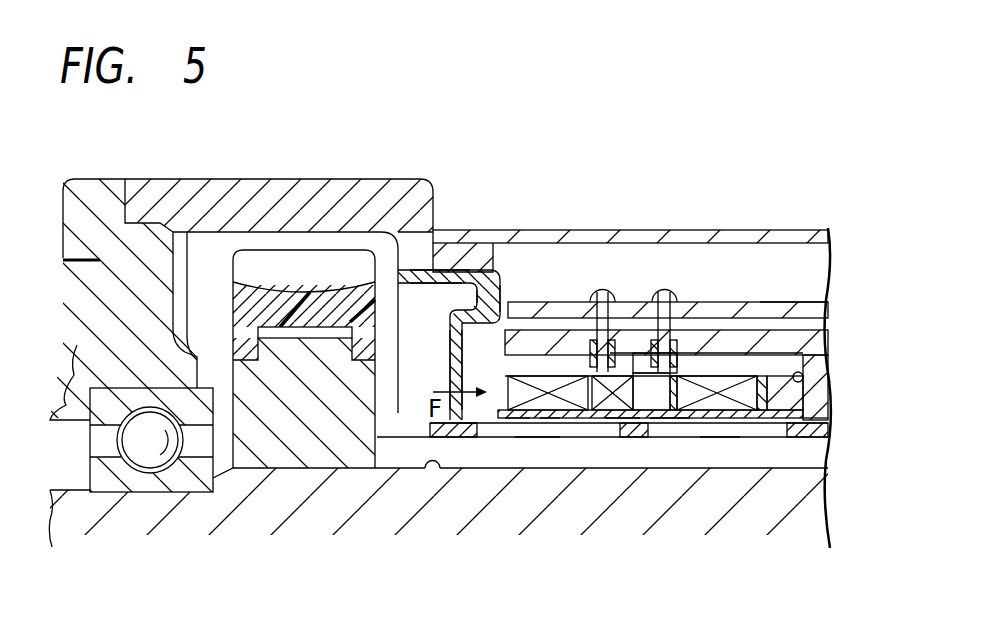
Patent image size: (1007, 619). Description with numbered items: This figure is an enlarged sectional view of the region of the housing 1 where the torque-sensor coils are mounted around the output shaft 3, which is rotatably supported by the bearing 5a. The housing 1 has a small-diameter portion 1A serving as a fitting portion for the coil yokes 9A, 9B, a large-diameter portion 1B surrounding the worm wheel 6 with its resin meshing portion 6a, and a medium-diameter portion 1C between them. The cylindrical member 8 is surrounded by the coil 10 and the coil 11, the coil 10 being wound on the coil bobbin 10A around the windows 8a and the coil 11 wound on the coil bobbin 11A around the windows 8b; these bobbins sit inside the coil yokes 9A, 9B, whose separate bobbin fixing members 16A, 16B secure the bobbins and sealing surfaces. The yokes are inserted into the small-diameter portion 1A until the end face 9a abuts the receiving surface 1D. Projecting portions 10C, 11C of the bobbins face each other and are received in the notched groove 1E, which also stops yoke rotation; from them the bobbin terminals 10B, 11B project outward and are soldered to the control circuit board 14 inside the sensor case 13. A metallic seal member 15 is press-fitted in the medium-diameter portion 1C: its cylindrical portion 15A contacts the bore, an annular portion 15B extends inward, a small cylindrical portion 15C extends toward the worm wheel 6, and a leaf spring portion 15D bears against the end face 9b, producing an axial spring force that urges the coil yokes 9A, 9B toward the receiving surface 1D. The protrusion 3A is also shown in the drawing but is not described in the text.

The housing 1 is at (152, 178).
The small-diameter portion 1A is at (828, 310).
The large-diameter portion 1B is at (300, 178).
The medium-diameter portion 1C is at (447, 270).
The receiving surface 1D is at (803, 378).
The notched groove 1E is at (628, 335).
The output shaft 3 is at (50, 533).
The base protrusion 3A is at (433, 468).
The bearing 5a is at (107, 443).
The worm wheel 6 is at (266, 243).
The meshing portion 6a is at (332, 262).
The cylindrical member 8 is at (820, 432).
The windows 8a is at (718, 437).
The windows 8b is at (532, 440).
The end face 9a is at (805, 352).
The end face 9b is at (455, 373).
The coil yoke 9A is at (782, 437).
The coil yoke 9B is at (478, 440).
The coil 10 is at (770, 395).
The coil bobbin 10A is at (755, 437).
The bobbin terminal 10B is at (665, 312).
The projecting portion 10C is at (673, 320).
The coil 11 is at (547, 420).
The coil bobbin 11A is at (515, 420).
The bobbin terminal 11B is at (592, 290).
The projecting portion 11C is at (588, 298).
The sensor case 13 is at (790, 230).
The control circuit board 14 is at (790, 300).
The seal member 15 is at (436, 359).
The cylindrical portion 15A is at (403, 270).
The annular portion 15B is at (500, 290).
The small cylindrical portion 15C is at (478, 280).
The leaf spring portion 15D is at (503, 322).
The bobbin fixing member 16A is at (662, 420).
The bobbin fixing member 16B is at (618, 418).